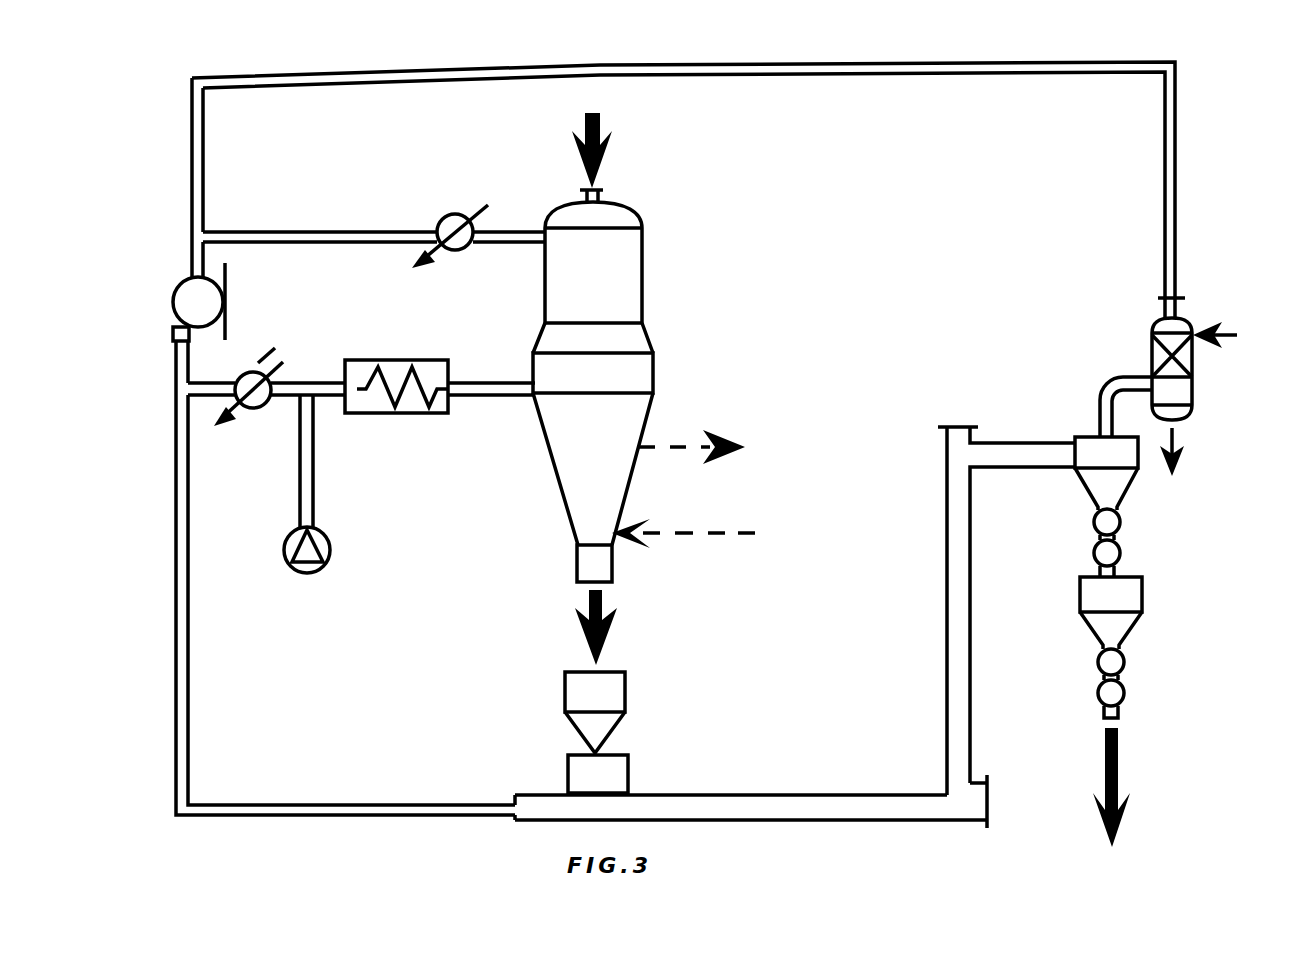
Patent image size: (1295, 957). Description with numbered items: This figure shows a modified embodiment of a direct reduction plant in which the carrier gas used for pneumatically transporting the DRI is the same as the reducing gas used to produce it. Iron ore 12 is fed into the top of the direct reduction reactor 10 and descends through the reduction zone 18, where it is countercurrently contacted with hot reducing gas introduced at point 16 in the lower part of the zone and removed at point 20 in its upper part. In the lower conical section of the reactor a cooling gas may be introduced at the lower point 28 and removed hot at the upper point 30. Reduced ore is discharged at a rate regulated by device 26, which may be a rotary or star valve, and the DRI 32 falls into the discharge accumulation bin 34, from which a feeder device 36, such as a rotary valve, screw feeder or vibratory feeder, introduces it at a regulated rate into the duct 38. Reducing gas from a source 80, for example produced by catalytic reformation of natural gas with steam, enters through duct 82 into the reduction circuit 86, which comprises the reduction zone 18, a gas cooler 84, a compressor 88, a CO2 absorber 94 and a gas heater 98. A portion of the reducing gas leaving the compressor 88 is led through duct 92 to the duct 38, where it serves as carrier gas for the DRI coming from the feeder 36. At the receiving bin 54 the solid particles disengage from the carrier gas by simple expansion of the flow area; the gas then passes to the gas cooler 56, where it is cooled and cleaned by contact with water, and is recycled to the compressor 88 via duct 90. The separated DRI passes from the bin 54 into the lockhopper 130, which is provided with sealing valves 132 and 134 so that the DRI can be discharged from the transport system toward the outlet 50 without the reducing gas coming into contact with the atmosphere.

The direct reduction reactor 10 is at (626, 367).
The iron ore 12 is at (576, 152).
The reducing gas introduction point 16 is at (503, 373).
The reduction zone 18 is at (613, 293).
The reducing gas removal point 20 is at (522, 225).
The discharge regulating device 26 is at (577, 575).
The cooling gas inlet 28 is at (695, 532).
The cooling gas outlet 30 is at (673, 440).
The DRI 32 is at (607, 643).
The discharge accumulation bin 34 is at (608, 695).
The feeder device 36 is at (630, 760).
The duct 38 is at (677, 793).
The product discharge 50 is at (1100, 810).
The receiving bin 54 is at (1093, 455).
The gas cooler 56 is at (1197, 385).
The reducing gas source 80 is at (307, 573).
The duct 82 is at (317, 488).
The gas cooler 84 is at (448, 213).
The reduction circuit 86 is at (319, 230).
The compressor 88 is at (175, 293).
The duct 90 is at (1180, 208).
The duct 92 is at (307, 802).
The CO2 absorber 94 is at (266, 388).
The gas heater 98 is at (400, 360).
The lockhopper 130 is at (1080, 595).
The sealing valve 132 is at (1100, 540).
The sealing valve 134 is at (1102, 680).